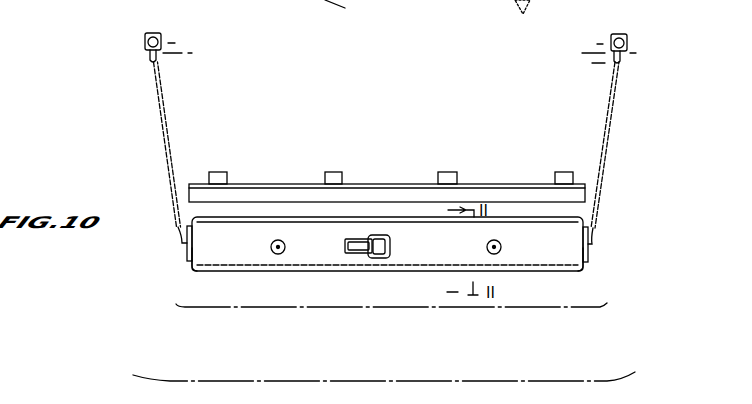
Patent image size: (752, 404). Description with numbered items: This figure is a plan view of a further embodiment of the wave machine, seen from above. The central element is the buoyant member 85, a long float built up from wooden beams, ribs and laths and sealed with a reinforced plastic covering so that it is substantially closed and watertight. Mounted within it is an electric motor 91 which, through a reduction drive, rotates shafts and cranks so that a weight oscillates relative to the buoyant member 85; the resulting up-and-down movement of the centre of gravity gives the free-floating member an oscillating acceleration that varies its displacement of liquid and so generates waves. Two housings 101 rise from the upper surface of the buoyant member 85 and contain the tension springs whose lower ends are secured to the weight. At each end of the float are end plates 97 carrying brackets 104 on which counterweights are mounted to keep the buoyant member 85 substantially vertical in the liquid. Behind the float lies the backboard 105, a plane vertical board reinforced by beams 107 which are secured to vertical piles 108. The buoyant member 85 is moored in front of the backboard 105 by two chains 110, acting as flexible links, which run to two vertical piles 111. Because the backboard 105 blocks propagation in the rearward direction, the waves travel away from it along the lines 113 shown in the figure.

The buoyant member 85 is at (235, 253).
The electric motor 91 is at (362, 248).
The end plates 97 is at (191, 266).
The housings 101 is at (280, 256).
The brackets 104 is at (186, 258).
The backboard 105 is at (492, 184).
The beams 107 is at (302, 184).
The vertical piles 108 is at (343, 172).
The chains 110 is at (160, 134).
The vertical piles 111 is at (145, 46).
The lines of wave propagation 113 is at (432, 380).